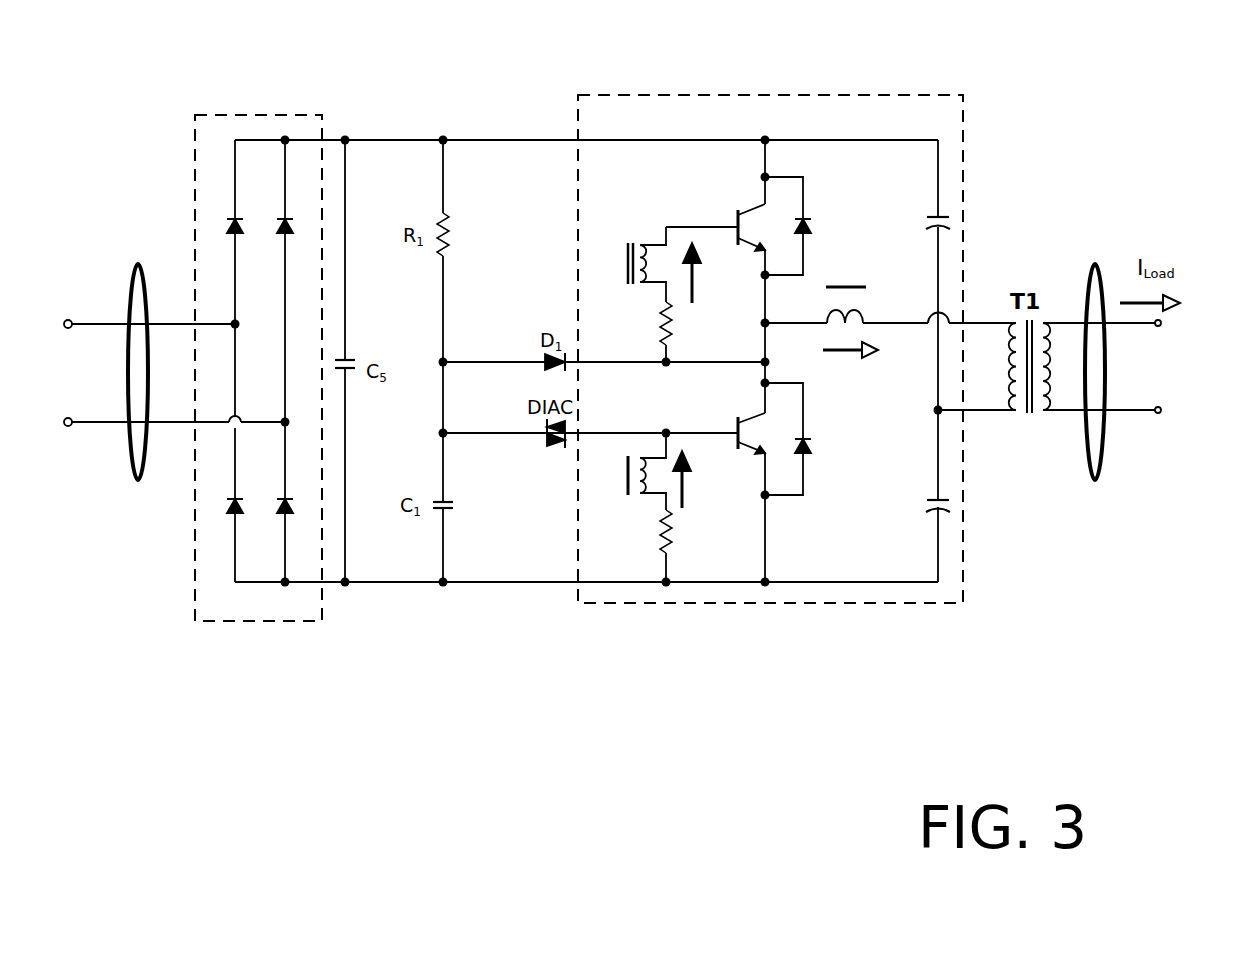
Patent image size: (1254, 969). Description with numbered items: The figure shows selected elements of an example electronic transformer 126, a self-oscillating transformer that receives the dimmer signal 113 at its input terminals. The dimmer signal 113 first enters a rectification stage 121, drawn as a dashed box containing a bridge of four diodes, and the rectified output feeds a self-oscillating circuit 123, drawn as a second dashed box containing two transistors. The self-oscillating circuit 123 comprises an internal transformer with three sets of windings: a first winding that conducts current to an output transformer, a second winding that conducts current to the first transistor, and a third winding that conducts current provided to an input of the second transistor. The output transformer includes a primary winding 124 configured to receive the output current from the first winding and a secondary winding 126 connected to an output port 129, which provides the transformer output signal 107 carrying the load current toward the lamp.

The transformer output signal 107 is at (1095, 264).
The dimmer signal 113 is at (138, 480).
The rectification stage 121 is at (322, 612).
The self-oscillating circuit 123 is at (578, 122).
The primary winding 124 is at (1009, 414).
The electronic transformer 126 is at (1038, 414).
The output port 129 is at (1173, 360).